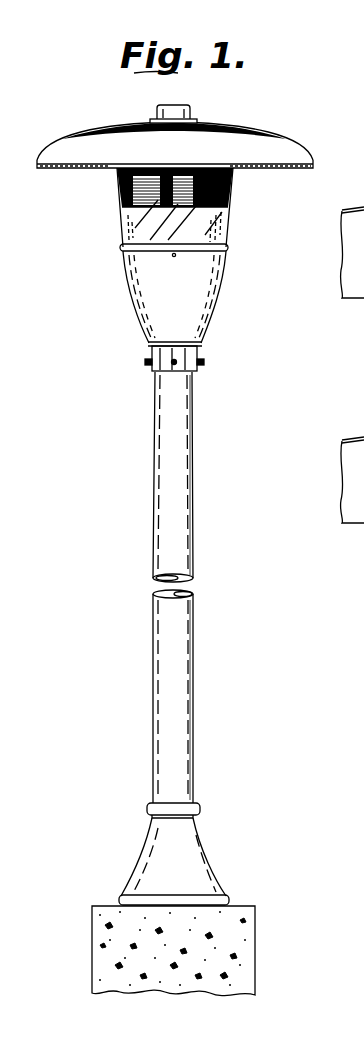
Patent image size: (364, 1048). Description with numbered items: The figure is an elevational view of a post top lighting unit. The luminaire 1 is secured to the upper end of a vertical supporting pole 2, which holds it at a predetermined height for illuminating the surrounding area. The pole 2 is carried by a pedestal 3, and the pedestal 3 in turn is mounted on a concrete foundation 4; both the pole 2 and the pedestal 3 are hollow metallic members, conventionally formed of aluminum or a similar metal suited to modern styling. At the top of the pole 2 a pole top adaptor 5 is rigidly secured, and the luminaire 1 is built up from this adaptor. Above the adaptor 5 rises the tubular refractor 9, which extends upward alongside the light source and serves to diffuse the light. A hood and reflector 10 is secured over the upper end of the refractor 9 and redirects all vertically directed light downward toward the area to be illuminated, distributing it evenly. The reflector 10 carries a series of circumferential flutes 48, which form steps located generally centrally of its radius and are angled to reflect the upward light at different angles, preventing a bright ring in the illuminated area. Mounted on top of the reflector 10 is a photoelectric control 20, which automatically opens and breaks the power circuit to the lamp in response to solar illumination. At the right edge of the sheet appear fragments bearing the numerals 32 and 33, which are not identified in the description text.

The luminaire 1 is at (223, 283).
The vertical supporting pole 2 is at (187, 505).
The pedestal 3 is at (200, 857).
The concrete foundation 4 is at (108, 908).
The pole top adaptor 5 is at (196, 350).
The tubular refractor 9 is at (217, 228).
The hood and reflector 10 is at (290, 149).
The photoelectric control 20 is at (192, 111).
The circular flutes 48 is at (246, 130).
The fragment element 32 is at (352, 365).
The fragment element 33 is at (363, 282).